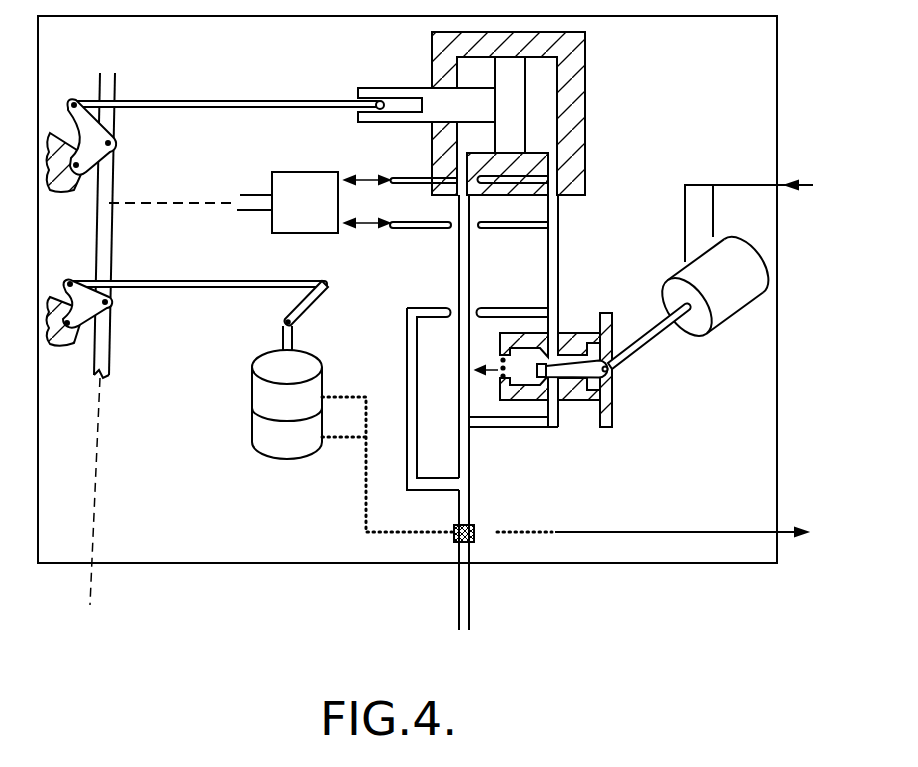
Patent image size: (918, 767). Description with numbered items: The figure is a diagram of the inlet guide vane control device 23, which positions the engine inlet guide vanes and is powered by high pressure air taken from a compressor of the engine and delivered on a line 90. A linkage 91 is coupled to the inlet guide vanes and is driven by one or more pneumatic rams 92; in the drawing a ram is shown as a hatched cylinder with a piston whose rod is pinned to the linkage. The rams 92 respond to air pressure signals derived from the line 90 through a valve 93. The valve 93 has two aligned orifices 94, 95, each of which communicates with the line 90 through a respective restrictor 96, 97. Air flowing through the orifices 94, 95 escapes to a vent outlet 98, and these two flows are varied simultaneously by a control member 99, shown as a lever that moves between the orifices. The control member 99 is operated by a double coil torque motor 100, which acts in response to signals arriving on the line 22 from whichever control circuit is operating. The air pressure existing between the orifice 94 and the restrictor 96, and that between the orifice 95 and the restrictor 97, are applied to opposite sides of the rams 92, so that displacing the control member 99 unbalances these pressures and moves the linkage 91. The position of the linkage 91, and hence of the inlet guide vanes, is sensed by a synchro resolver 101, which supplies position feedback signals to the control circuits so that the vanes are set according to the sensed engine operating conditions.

The line 22 is at (733, 185).
The inlet guide vane control device 23 is at (316, 572).
The line 90 is at (465, 598).
The linkage 91 is at (103, 343).
The pneumatic rams 92 is at (573, 67).
The valve 93 is at (612, 454).
The orifice 94 is at (551, 386).
The orifice 95 is at (560, 355).
The restrictor 96 is at (466, 455).
The restrictor 97 is at (522, 312).
The vent outlet 98 is at (503, 364).
The control member 99 is at (607, 378).
The double coil torque motor 100 is at (730, 298).
The synchro resolver 101 is at (272, 446).